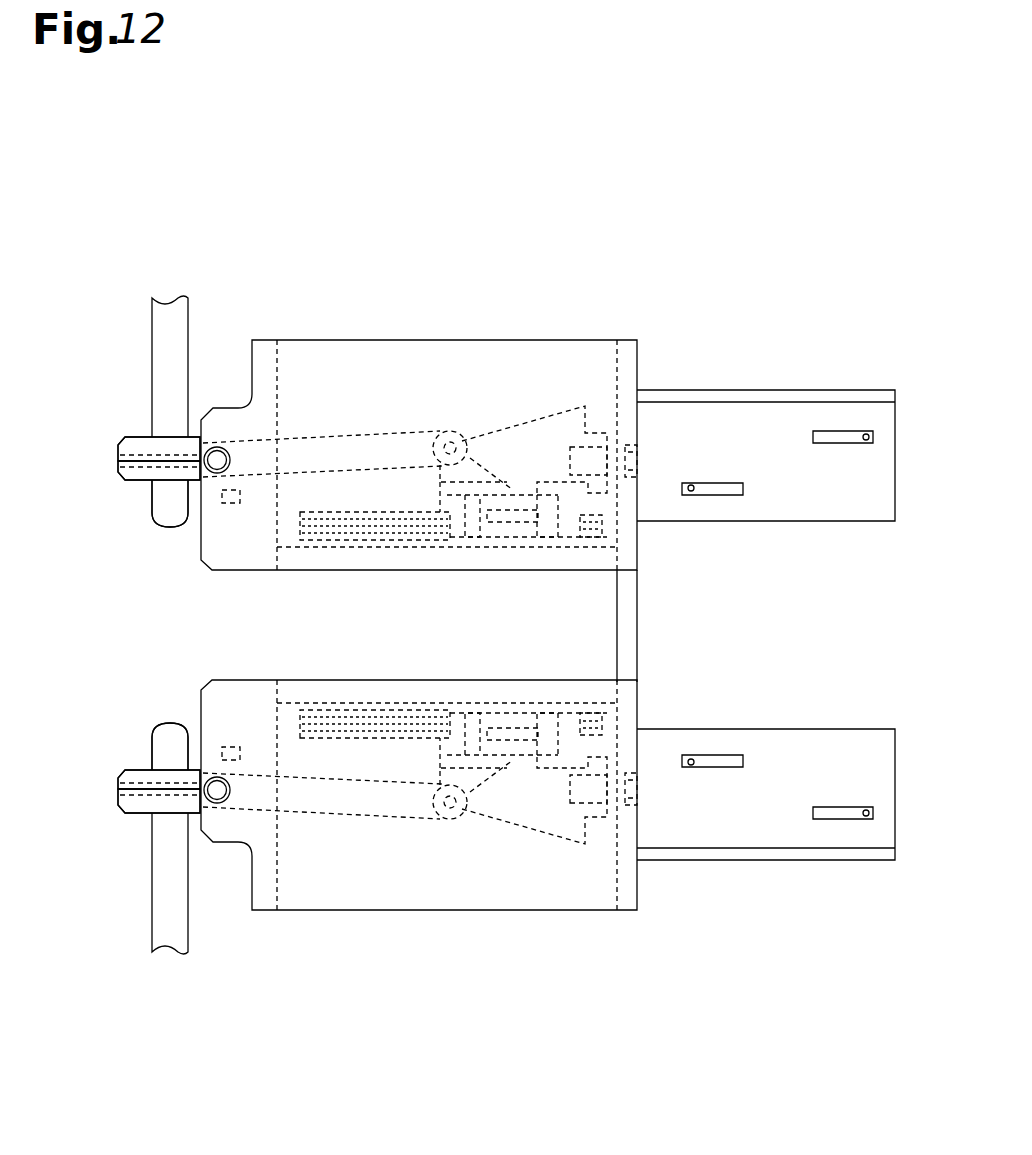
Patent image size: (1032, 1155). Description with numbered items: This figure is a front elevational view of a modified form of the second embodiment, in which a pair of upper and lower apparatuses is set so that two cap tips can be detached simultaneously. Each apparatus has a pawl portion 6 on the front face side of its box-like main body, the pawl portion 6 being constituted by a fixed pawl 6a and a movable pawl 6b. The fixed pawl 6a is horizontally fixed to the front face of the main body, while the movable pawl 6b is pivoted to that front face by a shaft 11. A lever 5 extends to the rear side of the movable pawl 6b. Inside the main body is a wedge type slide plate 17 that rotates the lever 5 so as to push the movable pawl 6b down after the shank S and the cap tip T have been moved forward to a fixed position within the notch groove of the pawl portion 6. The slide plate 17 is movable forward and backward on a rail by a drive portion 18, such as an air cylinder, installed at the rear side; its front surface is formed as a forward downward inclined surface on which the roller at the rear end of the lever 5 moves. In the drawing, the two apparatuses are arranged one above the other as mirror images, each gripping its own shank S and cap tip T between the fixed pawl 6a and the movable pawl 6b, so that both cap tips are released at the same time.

The lever 5 is at (363, 435).
The pawl portion 6 is at (118, 431).
The fixed pawl 6a is at (118, 450).
The movable pawl 6b is at (118, 470).
The shaft 11 is at (217, 455).
The wedge type slide plate 17 is at (550, 417).
The drive portion 18 is at (827, 390).
The shank S is at (150, 337).
The cap tip T is at (153, 513).